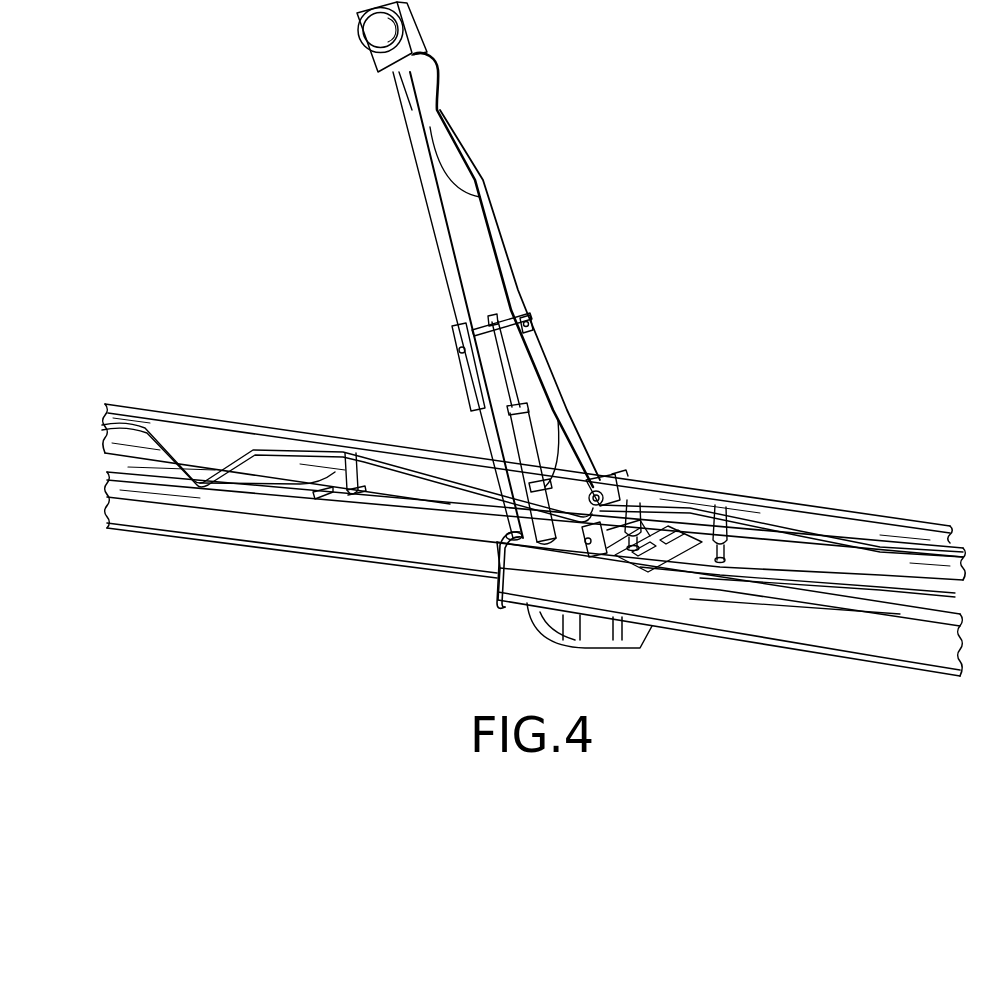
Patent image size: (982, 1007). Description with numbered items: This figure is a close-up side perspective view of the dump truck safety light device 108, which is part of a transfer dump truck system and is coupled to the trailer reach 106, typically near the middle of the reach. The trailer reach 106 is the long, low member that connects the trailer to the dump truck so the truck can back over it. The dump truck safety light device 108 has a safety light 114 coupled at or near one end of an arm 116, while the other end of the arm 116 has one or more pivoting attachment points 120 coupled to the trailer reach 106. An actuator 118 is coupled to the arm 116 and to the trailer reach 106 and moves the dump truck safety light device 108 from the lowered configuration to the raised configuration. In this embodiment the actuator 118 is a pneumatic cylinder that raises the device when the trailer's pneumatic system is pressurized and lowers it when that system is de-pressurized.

The trailer reach 106 is at (867, 640).
The dump truck safety light device 108 is at (477, 197).
The safety light 114 is at (358, 43).
The arm 116 is at (447, 288).
The actuator 118 is at (527, 440).
The pivoting attachment points 120 is at (495, 580).